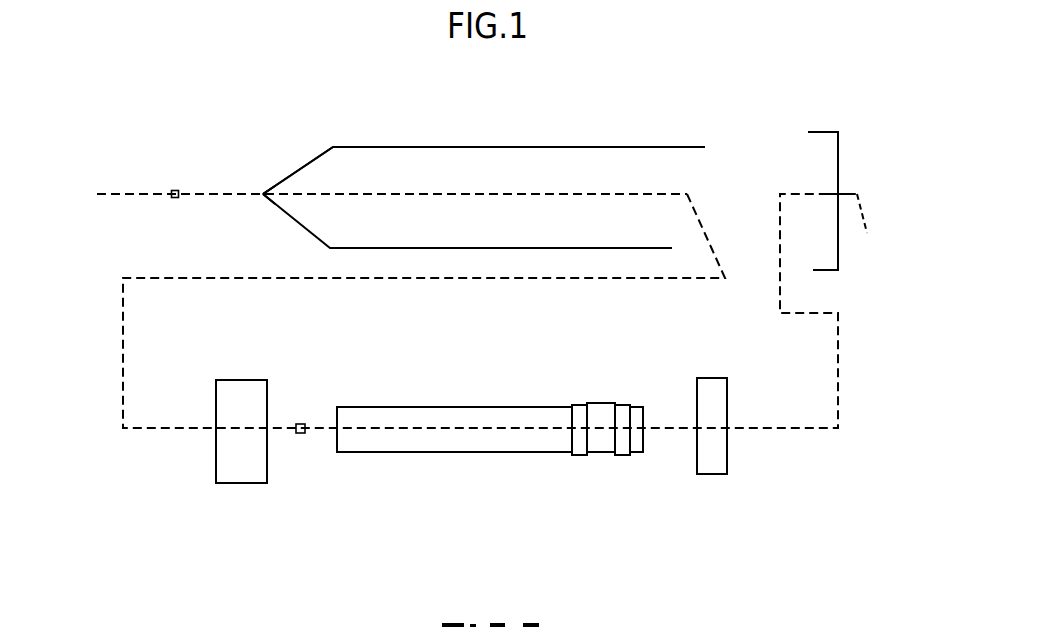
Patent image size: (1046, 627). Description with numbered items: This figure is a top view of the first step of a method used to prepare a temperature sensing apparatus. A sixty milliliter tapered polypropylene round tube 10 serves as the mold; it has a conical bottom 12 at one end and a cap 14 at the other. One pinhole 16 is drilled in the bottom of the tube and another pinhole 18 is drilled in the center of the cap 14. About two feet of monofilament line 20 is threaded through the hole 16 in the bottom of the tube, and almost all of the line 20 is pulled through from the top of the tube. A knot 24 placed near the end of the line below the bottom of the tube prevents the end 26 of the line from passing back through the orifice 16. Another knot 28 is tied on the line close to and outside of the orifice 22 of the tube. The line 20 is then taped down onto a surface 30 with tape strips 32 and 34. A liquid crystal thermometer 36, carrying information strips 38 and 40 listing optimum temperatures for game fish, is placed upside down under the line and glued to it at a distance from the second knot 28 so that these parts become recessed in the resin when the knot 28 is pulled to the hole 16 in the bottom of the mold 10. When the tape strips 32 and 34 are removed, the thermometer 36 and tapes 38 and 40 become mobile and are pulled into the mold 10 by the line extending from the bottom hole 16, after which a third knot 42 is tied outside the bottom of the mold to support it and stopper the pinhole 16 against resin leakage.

The tapered polypropylene round tube 10 is at (461, 146).
The conical bottom 12 is at (293, 173).
The cap 14 is at (807, 128).
The pinhole 16 is at (263, 194).
The pinhole 18 is at (838, 194).
The monofilament line 20 is at (140, 192).
The orifice 22 is at (697, 170).
The knot 24 is at (174, 198).
The end 26 is at (97, 193).
The knot 28 is at (302, 424).
The surface 30 is at (494, 422).
The tape strip 32 is at (218, 483).
The tape strip 34 is at (725, 474).
The liquid crystal thermometer 36 is at (487, 406).
The information strip 38 is at (578, 404).
The information strip 40 is at (622, 403).
The third knot 42 is at (875, 225).